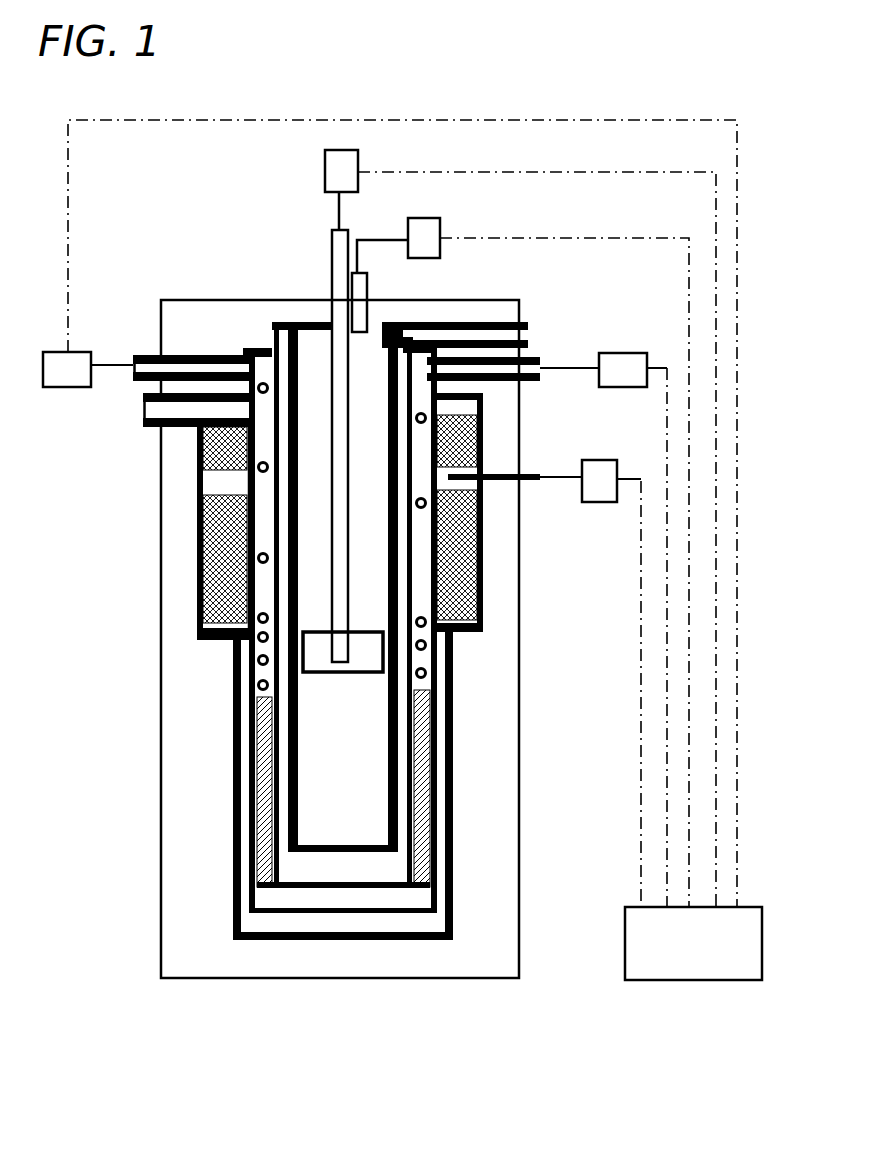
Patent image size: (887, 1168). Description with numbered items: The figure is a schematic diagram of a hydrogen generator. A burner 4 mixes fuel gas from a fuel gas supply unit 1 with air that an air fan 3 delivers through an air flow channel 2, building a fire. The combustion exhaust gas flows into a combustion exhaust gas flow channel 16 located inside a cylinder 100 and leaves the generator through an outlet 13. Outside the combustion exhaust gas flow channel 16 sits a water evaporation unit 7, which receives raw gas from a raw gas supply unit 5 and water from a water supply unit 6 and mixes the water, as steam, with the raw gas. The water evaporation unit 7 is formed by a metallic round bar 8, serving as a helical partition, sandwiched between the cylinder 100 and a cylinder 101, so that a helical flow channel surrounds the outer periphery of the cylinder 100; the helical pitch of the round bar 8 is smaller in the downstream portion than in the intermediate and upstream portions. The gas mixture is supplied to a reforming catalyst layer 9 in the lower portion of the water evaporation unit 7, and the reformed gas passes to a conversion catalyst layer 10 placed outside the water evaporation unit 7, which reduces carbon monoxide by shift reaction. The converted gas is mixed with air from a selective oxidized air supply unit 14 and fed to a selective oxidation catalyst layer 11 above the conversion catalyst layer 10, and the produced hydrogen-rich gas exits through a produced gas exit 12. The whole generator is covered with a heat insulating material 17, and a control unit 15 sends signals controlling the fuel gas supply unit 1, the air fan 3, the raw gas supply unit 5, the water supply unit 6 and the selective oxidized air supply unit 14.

The fuel gas supply unit 1 is at (338, 163).
The air flow channel 2 is at (322, 385).
The air fan 3 is at (424, 233).
The burner 4 is at (357, 650).
The raw gas supply unit 5 is at (618, 368).
The water supply unit 6 is at (63, 363).
The water evaporation unit 7 is at (262, 537).
The metallic round bar 8 is at (256, 560).
The reforming catalyst layer 9 is at (428, 797).
The conversion catalyst layer 10 is at (457, 595).
The selective oxidation catalyst layer 11 is at (460, 442).
The produced gas exit 12 is at (150, 413).
The outlet 13 is at (530, 330).
The selective oxidized air supply unit 14 is at (600, 467).
The control unit 15 is at (625, 910).
The combustion exhaust gas flow channel 16 is at (283, 706).
The heat insulating material 17 is at (183, 802).
The cylinder 100 is at (243, 640).
The cylinder 101 is at (242, 632).